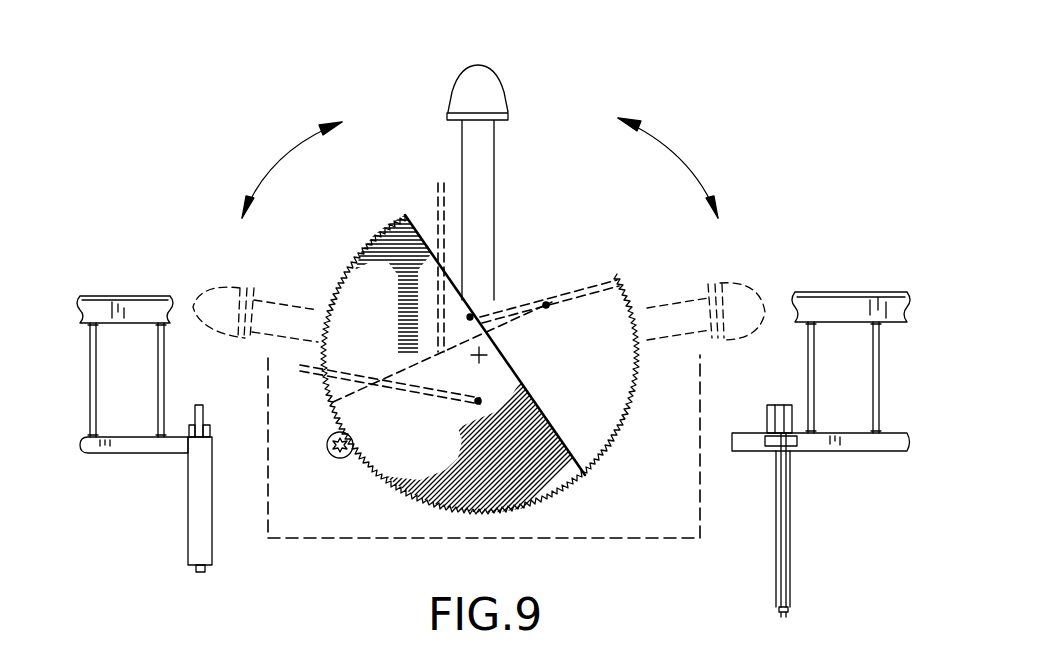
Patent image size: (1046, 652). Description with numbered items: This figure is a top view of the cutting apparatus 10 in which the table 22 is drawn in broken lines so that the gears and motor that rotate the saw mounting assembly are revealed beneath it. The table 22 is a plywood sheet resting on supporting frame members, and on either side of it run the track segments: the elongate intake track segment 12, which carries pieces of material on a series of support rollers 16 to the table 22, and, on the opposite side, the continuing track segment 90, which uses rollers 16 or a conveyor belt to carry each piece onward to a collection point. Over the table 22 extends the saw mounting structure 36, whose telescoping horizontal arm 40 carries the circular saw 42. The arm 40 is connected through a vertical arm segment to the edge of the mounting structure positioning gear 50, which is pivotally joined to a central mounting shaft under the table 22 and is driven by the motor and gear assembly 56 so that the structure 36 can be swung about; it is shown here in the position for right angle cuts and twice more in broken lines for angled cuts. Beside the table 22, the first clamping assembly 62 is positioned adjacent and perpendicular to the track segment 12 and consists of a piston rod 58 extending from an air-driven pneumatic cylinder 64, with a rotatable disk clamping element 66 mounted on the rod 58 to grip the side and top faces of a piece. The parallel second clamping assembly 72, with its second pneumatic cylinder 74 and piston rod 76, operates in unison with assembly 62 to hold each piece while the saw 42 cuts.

The apparatus 10 is at (569, 75).
The intake track segment 12 is at (122, 453).
The support rollers 16 is at (157, 368).
The table 22 is at (605, 540).
The saw mounting structure 36 is at (548, 225).
The telescoping horizontal arm 40 is at (488, 184).
The circular saw 42 is at (437, 190).
The mounting structure positioning gear 50 is at (446, 457).
The motor and gear assembly 56 is at (327, 446).
The piston rod 58 is at (212, 438).
The first clamping assembly 62 is at (190, 507).
The air-driven pneumatic cylinder 64 is at (190, 545).
The rotatable disk clamping element 66 is at (204, 410).
The second clamping assembly 72 is at (792, 505).
The second air driven pneumatic cylinder 74 is at (792, 580).
The piston rod 76 is at (792, 445).
The track segment 90 is at (886, 452).